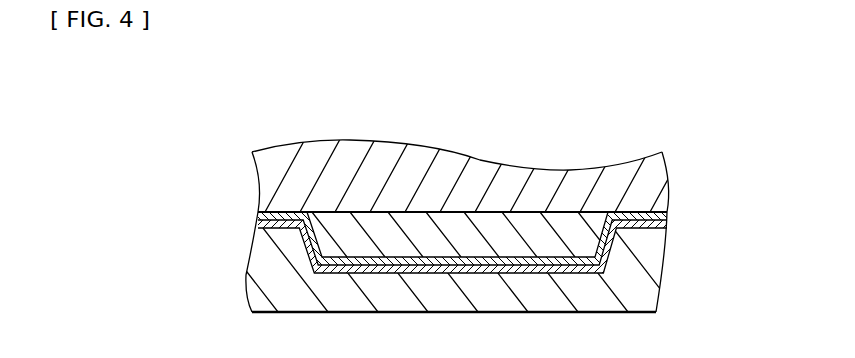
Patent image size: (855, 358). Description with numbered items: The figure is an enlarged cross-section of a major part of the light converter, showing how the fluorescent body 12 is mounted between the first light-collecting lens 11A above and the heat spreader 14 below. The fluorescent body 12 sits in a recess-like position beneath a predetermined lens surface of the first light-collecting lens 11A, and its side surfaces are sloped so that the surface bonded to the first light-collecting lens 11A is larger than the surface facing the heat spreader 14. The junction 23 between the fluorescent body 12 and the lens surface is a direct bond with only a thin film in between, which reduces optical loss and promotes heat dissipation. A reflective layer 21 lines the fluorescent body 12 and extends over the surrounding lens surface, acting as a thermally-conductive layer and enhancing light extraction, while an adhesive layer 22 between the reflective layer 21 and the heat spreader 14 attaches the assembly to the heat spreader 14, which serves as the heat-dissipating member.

The first light-collecting lens 11A is at (657, 167).
The fluorescent body 12 is at (580, 240).
The heat spreader 14 is at (459, 303).
The reflective layer 21 is at (455, 243).
The adhesive layer 22 is at (604, 270).
The junction 23 is at (607, 203).